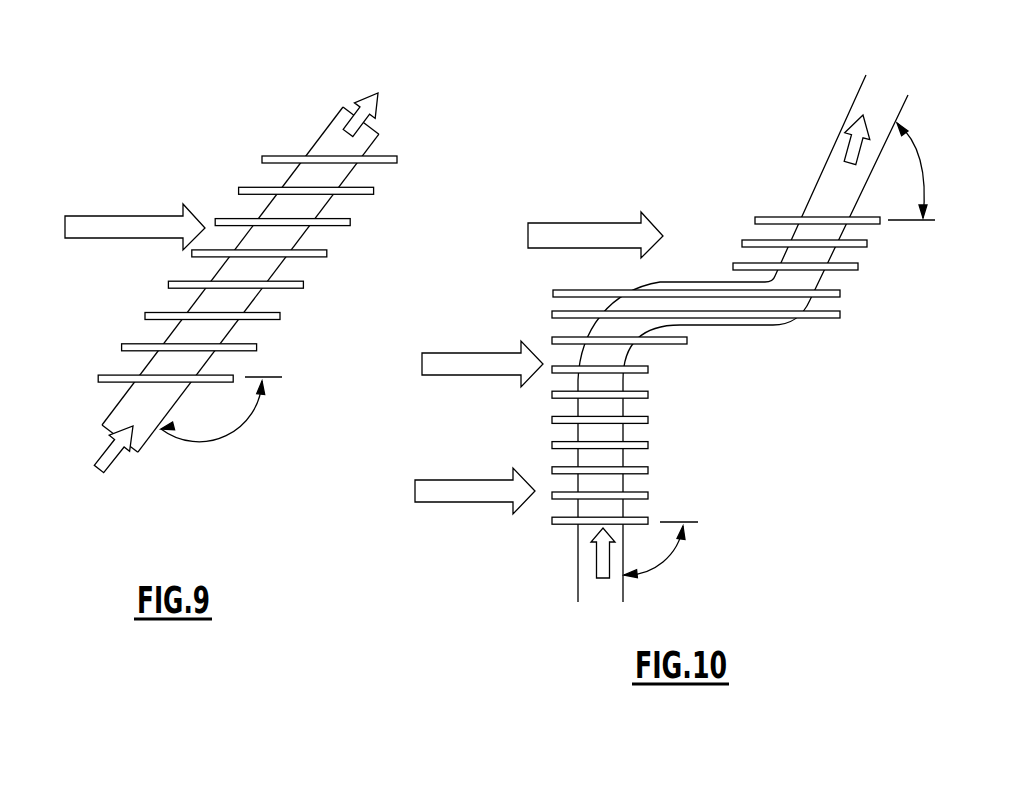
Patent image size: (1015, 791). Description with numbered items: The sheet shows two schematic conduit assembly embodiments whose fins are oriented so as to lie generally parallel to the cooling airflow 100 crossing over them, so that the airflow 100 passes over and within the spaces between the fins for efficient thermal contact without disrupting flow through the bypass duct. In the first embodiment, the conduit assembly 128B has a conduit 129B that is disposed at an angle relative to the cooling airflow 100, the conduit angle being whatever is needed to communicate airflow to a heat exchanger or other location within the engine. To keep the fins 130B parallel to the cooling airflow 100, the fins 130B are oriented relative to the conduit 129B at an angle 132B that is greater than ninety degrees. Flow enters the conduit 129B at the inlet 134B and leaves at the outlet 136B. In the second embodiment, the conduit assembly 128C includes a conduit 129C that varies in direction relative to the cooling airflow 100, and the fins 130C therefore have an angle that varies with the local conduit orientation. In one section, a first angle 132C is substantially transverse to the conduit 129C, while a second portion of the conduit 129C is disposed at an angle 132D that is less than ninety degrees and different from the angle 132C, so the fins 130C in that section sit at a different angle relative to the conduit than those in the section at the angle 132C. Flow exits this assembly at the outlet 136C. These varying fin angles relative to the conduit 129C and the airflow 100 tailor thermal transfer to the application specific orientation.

In FIG. 9, the cooling airflow 100 is at (103, 227).
In FIG. 10, the cooling airflow 100 is at (571, 232).
In FIG. 9, the conduit assembly 128B is at (248, 245).
In FIG. 9, the conduit 129B is at (207, 333).
In FIG. 9, the fins 130B is at (300, 285).
In FIG. 9, the angle 132B is at (217, 433).
In FIG. 9, the inlet 134B is at (118, 462).
In FIG. 9, the outlet 136B is at (373, 114).
In FIG. 10, the conduit assembly 128C is at (730, 338).
In FIG. 10, the conduit 129C is at (617, 407).
In FIG. 10, the fins 130C is at (646, 467).
In FIG. 10, the first angle 132C is at (668, 562).
In FIG. 10, the angle 132D is at (923, 160).
In FIG. 10, the outlet 136C is at (848, 137).